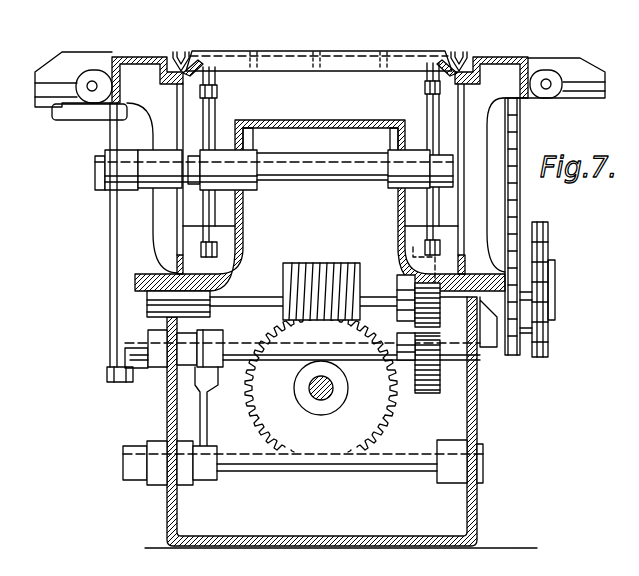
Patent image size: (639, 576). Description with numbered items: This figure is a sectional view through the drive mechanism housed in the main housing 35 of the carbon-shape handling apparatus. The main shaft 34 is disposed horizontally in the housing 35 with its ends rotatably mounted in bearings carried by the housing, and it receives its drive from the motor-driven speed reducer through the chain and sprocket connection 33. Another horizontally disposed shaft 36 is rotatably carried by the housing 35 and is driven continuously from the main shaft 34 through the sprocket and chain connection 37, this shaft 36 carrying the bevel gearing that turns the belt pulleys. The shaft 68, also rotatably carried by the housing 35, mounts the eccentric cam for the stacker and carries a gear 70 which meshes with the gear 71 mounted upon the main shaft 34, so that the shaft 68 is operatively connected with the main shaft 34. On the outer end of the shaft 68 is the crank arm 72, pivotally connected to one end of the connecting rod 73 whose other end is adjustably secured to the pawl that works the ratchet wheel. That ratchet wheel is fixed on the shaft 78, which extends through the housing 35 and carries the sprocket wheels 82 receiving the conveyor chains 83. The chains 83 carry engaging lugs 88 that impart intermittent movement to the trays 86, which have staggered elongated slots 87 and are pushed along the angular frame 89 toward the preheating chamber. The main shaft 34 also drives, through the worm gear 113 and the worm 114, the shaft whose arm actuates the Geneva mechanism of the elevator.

The chain and sprocket connection 33 is at (540, 243).
The main shaft 34 is at (372, 283).
The main housing 35 is at (477, 425).
The shaft 36 is at (320, 195).
The sprocket and chain connection 37 is at (514, 197).
The shaft 68 is at (243, 353).
The gear 70 is at (427, 394).
The gear 71 is at (418, 310).
The crank arm 72 is at (127, 382).
The connecting rod 73 is at (113, 277).
The shaft 78 is at (316, 170).
The sprocket wheels 82 is at (210, 114).
The conveyor chains 83 is at (427, 86).
The trays 86 is at (277, 60).
The elongated slots 87 is at (187, 52).
The engaging lugs 88 is at (213, 78).
The angular frame 89 is at (178, 52).
The worm gear 113 is at (262, 445).
The worm 114 is at (327, 252).